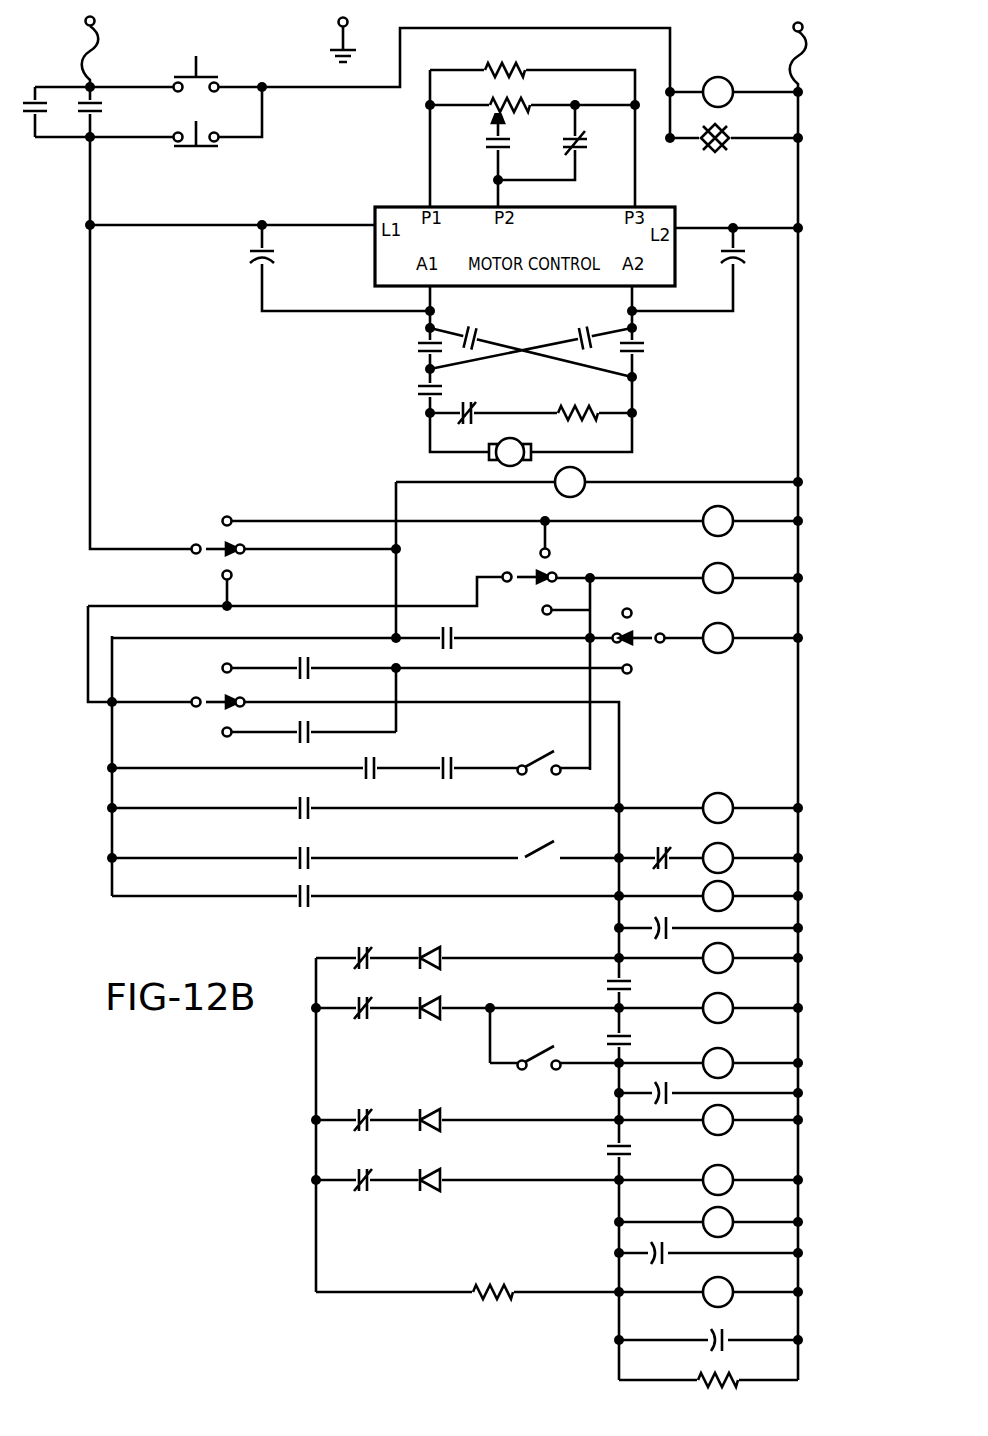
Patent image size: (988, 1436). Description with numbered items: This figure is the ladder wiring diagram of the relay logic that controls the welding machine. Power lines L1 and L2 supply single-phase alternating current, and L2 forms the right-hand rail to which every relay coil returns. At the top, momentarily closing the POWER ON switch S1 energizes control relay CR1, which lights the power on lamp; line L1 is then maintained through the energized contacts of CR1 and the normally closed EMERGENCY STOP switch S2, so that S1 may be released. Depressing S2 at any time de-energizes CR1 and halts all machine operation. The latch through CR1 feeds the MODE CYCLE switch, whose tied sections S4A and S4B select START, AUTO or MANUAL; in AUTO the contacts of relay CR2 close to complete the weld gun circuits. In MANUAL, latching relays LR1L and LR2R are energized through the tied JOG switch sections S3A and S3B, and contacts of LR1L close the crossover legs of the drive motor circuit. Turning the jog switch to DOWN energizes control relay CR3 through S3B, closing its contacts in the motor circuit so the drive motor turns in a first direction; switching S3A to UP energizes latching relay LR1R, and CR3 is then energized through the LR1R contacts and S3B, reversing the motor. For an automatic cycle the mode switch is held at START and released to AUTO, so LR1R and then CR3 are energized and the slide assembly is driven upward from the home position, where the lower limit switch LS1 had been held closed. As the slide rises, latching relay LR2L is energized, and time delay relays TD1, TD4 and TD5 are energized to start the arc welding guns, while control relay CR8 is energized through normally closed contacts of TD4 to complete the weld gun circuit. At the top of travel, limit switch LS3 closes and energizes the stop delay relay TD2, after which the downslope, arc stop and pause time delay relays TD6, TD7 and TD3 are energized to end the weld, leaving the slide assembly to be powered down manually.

The power line L1 is at (78, 18).
The power line L2 is at (811, 20).
The POWER ON switch S1 is at (201, 70).
The EMERGENCY STOP switch S2 is at (203, 123).
The control relay CR1 is at (716, 79).
The control relay contacts CR2 is at (590, 480).
The control relay CR3 is at (721, 629).
The control relay CR8 is at (736, 1287).
The JOG switch section A S3A is at (522, 568).
The JOG switch section B S3B is at (208, 691).
The MODE CYCLE switch section A S4A is at (213, 537).
The MODE CYCLE switch section B S4B is at (668, 648).
The lower limit switch LS1 is at (539, 753).
The limit switch LS3 is at (539, 1079).
The latching relay LR1R is at (719, 511).
The latching relay LR1L is at (718, 568).
The latching relay LR2R is at (742, 804).
The latching relay LR2L is at (741, 854).
The time delay relay TD1 is at (738, 893).
The STOP DELAY time delay relay TD2 is at (738, 1059).
The PAUSE time delay relay TD3 is at (738, 1217).
The time delay relay TD4 is at (738, 954).
The time delay relay TD5 is at (738, 1004).
The DOWNSLOPE time delay relay TD6 is at (738, 1116).
The ARC STOP time delay relay TD7 is at (738, 1175).